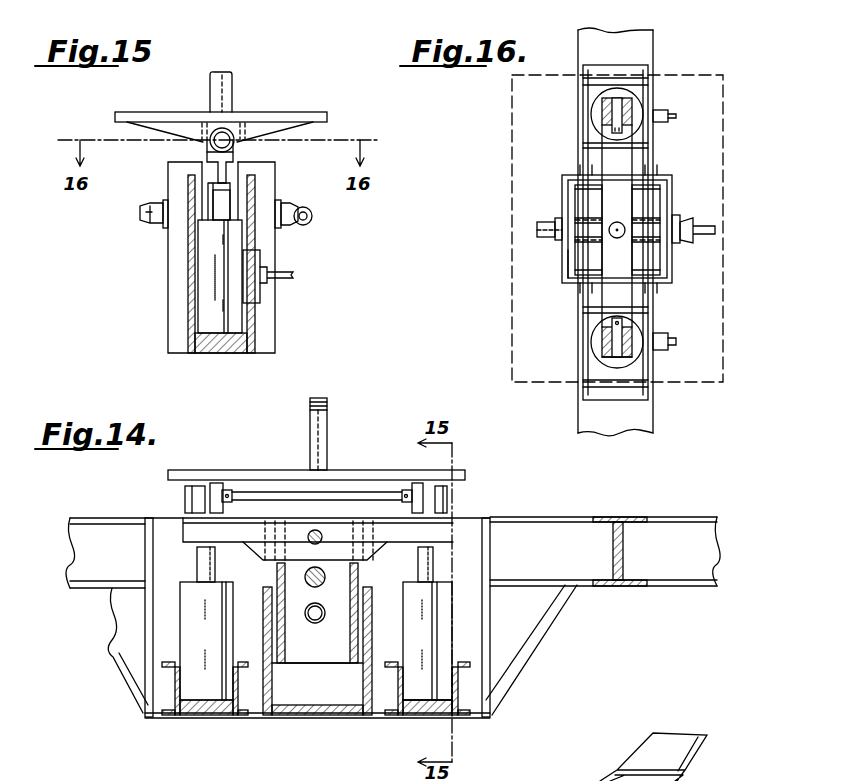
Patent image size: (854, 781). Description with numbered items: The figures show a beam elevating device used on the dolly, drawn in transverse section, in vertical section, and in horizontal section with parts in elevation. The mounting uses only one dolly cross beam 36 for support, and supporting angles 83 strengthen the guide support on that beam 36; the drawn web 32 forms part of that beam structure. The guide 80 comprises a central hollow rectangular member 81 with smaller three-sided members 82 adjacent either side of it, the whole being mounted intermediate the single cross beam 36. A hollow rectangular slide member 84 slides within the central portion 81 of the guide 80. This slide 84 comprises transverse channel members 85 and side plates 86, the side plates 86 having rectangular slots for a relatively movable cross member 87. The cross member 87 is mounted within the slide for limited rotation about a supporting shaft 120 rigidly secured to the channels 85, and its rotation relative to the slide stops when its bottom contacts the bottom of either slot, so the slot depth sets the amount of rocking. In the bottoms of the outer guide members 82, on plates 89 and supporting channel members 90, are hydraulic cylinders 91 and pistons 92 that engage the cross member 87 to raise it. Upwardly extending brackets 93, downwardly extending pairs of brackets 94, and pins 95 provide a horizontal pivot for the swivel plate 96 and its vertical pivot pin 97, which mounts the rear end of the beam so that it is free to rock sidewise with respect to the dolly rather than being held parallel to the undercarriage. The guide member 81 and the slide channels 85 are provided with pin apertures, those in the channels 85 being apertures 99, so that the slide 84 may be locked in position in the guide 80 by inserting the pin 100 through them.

In FIG. 14, the web of beam 32 is at (623, 560).
In FIG. 16, the dolly cross beam 36 is at (645, 50).
In FIG. 14, the dolly cross beam 36 is at (80, 518).
In FIG. 16, the guide 80 is at (680, 205).
In FIG. 15, the central hollow rectangular member 81 is at (168, 305).
In FIG. 16, the central hollow rectangular member 81 is at (667, 266).
In FIG. 14, the central hollow rectangular member 81 is at (360, 715).
In FIG. 15, the three-sided members 82 is at (177, 276).
In FIG. 16, the three-sided members 82 is at (650, 323).
In FIG. 14, the supporting angles 83 is at (520, 630).
In FIG. 16, the hollow rectangular slide member 84 is at (564, 264).
In FIG. 14, the hollow rectangular slide member 84 is at (340, 660).
In FIG. 16, the transverse channel members 85 is at (547, 229).
In FIG. 14, the transverse channel members 85 is at (365, 665).
In FIG. 16, the side plates 86 is at (655, 185).
In FIG. 14, the side plates 86 is at (285, 652).
In FIG. 16, the cross member 87 is at (615, 160).
In FIG. 14, the cross member 87 is at (440, 532).
In FIG. 14, the plates 89 is at (445, 715).
In FIG. 16, the supporting channel members 90 is at (588, 86).
In FIG. 14, the supporting channel members 90 is at (238, 715).
In FIG. 16, the hydraulic cylinders 91 is at (632, 112).
In FIG. 14, the hydraulic cylinders 91 is at (188, 639).
In FIG. 15, the pistons 92 is at (228, 196).
In FIG. 14, the pistons 92 is at (197, 564).
In FIG. 15, the upwardly extending brackets 93 is at (207, 152).
In FIG. 16, the upwardly extending brackets 93 is at (604, 345).
In FIG. 14, the upwardly extending brackets 93 is at (185, 497).
In FIG. 15, the downwardly extending pairs of brackets 94 is at (205, 142).
In FIG. 16, the downwardly extending pairs of brackets 94 is at (605, 352).
In FIG. 14, the downwardly extending pairs of brackets 94 is at (215, 483).
In FIG. 14, the pins 95 is at (447, 493).
In FIG. 15, the swivel plate 96 is at (313, 122).
In FIG. 16, the swivel plate 96 is at (722, 105).
In FIG. 14, the swivel plate 96 is at (272, 470).
In FIG. 15, the vertical pivot pin 97 is at (214, 88).
In FIG. 14, the vertical pivot pin 97 is at (327, 428).
In FIG. 14, the pin apertures 99 is at (323, 617).
In FIG. 15, the pin 100 is at (312, 213).
In FIG. 16, the pin 100 is at (693, 226).
In FIG. 14, the pin 100 is at (325, 582).
In FIG. 16, the supporting shaft 120 is at (580, 235).
In FIG. 14, the supporting shaft 120 is at (322, 533).